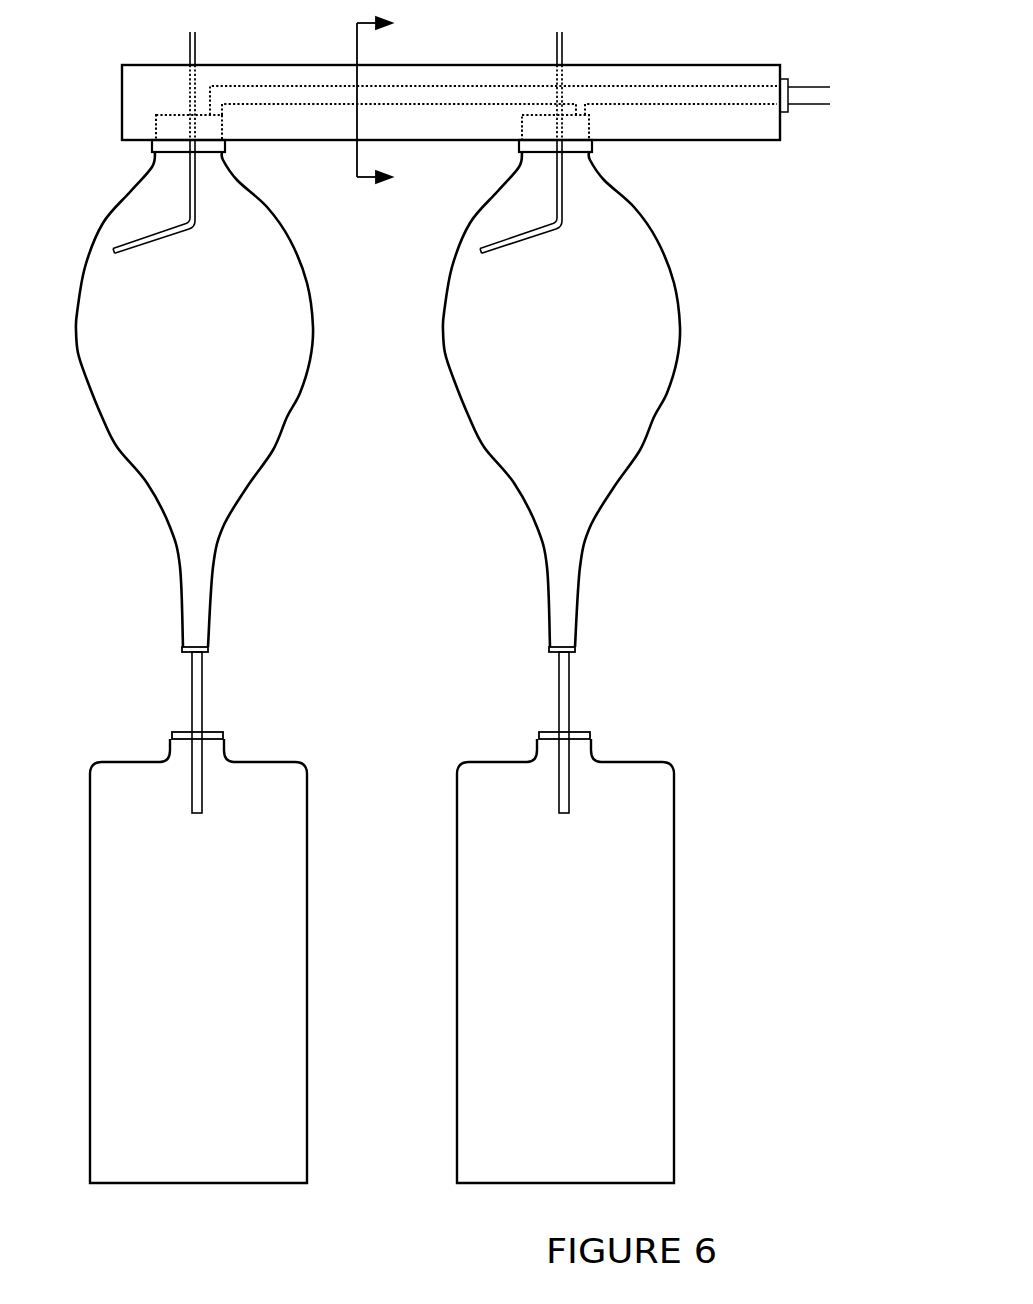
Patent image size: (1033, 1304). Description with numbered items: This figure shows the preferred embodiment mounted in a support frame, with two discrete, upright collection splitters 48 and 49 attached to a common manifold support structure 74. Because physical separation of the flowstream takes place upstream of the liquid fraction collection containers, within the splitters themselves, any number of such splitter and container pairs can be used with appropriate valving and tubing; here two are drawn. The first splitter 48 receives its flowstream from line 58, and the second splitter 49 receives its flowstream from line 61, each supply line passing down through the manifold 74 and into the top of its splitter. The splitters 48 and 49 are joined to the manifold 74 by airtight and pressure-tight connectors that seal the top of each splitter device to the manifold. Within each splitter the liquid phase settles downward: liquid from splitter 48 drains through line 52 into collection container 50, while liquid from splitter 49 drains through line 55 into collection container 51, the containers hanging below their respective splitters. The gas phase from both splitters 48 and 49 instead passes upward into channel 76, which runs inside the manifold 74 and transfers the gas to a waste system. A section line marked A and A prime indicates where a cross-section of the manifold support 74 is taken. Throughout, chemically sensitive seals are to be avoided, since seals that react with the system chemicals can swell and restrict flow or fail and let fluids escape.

The splitter 48 is at (78, 330).
The splitter 49 is at (538, 396).
The collection container 50 is at (308, 924).
The collection container 51 is at (587, 961).
The line 52 is at (204, 666).
The line 55 is at (578, 732).
The line 58 is at (188, 43).
The line 61 is at (521, 138).
The manifold support structure 74 is at (265, 64).
The channel 76 is at (713, 86).